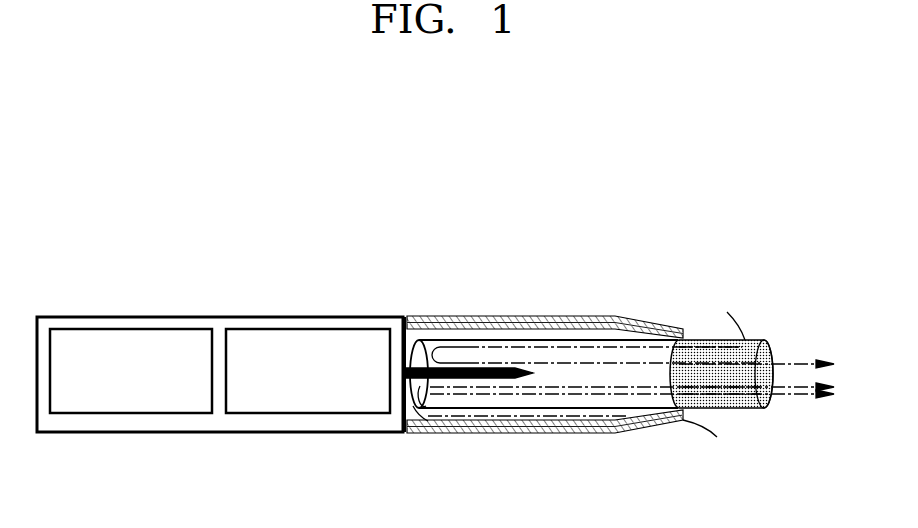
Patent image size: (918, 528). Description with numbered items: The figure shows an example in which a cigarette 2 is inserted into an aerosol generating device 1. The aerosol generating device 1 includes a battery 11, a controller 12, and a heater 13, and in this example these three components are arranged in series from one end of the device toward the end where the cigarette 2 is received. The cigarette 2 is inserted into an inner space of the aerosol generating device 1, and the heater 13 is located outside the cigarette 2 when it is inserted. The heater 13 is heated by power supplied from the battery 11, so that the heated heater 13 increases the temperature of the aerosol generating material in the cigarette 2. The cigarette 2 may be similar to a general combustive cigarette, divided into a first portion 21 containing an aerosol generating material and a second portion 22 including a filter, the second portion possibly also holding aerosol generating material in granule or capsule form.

The aerosol generating device 1 is at (640, 218).
The battery 11 is at (140, 328).
The controller 12 is at (325, 328).
The heater 13 is at (464, 367).
The cigarette 2 is at (619, 385).
The liquid storage / cartridge body 21 is at (559, 340).
The mouthpiece 22 is at (766, 340).